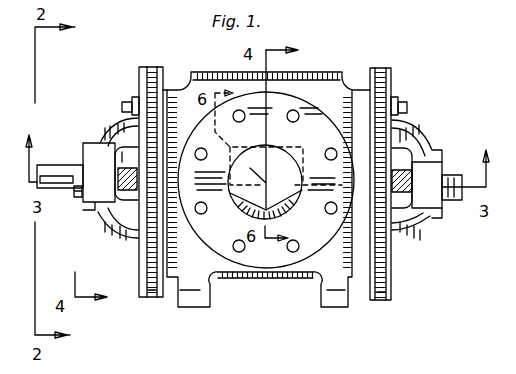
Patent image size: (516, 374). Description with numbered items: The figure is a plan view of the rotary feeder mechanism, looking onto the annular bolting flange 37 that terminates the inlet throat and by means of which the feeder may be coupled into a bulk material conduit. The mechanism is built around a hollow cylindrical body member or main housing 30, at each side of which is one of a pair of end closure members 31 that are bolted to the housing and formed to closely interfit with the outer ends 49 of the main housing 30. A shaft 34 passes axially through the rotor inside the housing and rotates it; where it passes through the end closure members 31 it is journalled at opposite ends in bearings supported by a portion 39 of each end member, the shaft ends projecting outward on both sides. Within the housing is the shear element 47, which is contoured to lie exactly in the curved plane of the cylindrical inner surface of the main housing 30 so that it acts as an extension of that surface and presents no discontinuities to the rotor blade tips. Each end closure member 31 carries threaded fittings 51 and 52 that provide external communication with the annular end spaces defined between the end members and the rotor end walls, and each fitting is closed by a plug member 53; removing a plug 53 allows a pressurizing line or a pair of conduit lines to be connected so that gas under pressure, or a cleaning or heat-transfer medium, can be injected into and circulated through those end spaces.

The main housing 30 is at (333, 107).
The end closure members 31 is at (150, 67).
The shaft 34 is at (62, 188).
The annular bolting flange 37 is at (252, 257).
The portion of the end members 39 is at (113, 227).
The shear element 47 is at (287, 204).
The outer ends of the main housing 49 is at (153, 297).
The threaded fittings 51 is at (393, 181).
The threaded fittings 52 is at (136, 100).
The plug member 53 is at (122, 107).